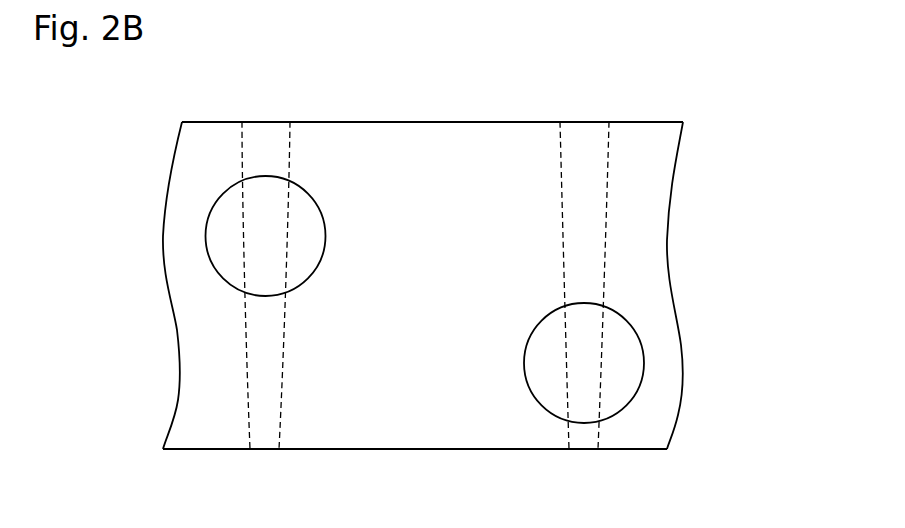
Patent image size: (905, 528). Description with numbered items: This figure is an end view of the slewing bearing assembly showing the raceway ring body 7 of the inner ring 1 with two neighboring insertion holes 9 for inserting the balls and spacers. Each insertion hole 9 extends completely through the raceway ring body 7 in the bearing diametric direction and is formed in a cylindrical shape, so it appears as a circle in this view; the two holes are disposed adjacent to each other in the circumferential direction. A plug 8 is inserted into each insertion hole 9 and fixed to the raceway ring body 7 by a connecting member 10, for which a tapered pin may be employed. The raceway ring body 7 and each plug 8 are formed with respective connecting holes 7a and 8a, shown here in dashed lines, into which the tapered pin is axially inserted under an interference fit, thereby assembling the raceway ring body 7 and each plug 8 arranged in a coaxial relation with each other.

The inner ring 1 is at (467, 108).
The raceway ring body 7 is at (422, 432).
The connecting hole 7a is at (280, 402).
The plug 8 is at (233, 272).
The connecting hole 8a is at (243, 218).
The insertion hole 9 is at (322, 252).
The connecting member 10 is at (275, 152).